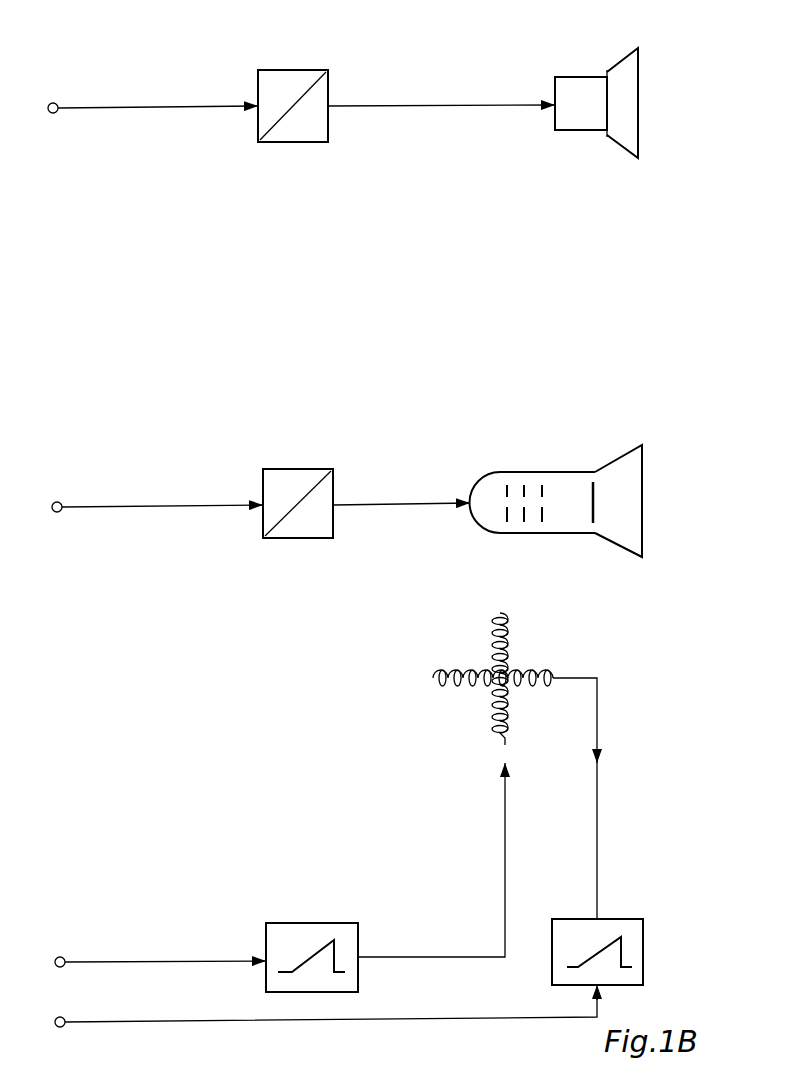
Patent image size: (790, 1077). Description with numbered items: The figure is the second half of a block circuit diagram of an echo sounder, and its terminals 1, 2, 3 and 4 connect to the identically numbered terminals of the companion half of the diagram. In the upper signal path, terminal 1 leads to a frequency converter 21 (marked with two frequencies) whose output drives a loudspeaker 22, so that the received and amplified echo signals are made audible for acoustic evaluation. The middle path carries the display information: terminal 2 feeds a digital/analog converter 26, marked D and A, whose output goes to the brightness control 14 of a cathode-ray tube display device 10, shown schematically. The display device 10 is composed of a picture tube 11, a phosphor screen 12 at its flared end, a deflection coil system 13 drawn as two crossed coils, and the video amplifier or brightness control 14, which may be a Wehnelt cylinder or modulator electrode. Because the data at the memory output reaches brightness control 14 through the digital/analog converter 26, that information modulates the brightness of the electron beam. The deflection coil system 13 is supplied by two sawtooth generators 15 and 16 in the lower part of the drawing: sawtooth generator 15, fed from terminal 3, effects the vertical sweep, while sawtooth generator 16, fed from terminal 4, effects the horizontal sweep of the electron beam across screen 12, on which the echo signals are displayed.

The terminal 1 is at (153, 100).
The terminal 2 is at (157, 497).
The terminal 3 is at (159, 951).
The terminal 4 is at (325, 1006).
The cathode-ray tube display device 10 is at (516, 510).
The picture tube 11 is at (563, 482).
The phosphor screen 12 is at (630, 472).
The deflection coil system 13 is at (500, 680).
The video amplifier or brightness control 14 is at (505, 517).
The sawtooth generator 15 is at (332, 930).
The sawtooth generator 16 is at (620, 927).
The frequency converter 21 is at (307, 77).
The loudspeaker 22 is at (575, 88).
The digital/analog converter 26 is at (308, 478).